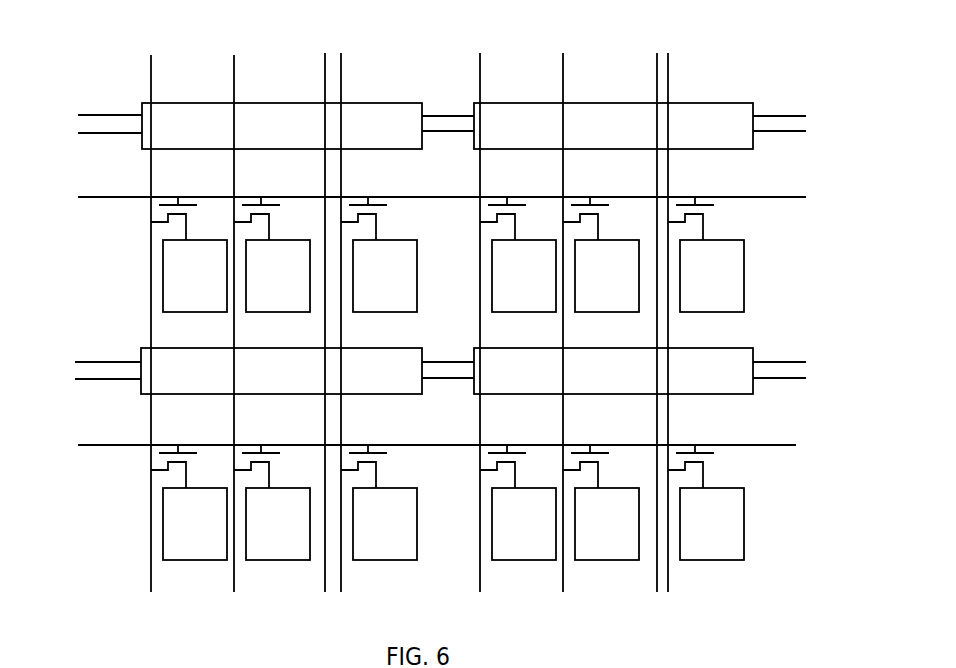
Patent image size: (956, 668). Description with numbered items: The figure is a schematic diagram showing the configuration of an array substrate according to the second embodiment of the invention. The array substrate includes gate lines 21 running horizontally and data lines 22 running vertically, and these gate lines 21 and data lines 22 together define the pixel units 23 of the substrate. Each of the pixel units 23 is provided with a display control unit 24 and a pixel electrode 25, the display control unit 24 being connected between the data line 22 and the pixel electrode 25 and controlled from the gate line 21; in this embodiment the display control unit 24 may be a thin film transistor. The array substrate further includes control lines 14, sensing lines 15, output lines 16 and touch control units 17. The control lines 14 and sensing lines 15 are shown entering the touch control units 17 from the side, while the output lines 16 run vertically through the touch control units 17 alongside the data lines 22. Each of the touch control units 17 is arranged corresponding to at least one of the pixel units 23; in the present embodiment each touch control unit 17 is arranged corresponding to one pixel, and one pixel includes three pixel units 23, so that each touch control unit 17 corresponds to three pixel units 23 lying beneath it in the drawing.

The control line 14 is at (125, 114).
The sensing line 15 is at (88, 132).
The output line 16 is at (325, 78).
The touch control unit 17 is at (223, 103).
The gate line 21 is at (107, 196).
The data line 22 is at (151, 72).
The pixel unit 23 is at (152, 275).
The display control unit 24 is at (172, 232).
The pixel electrode 25 is at (177, 282).